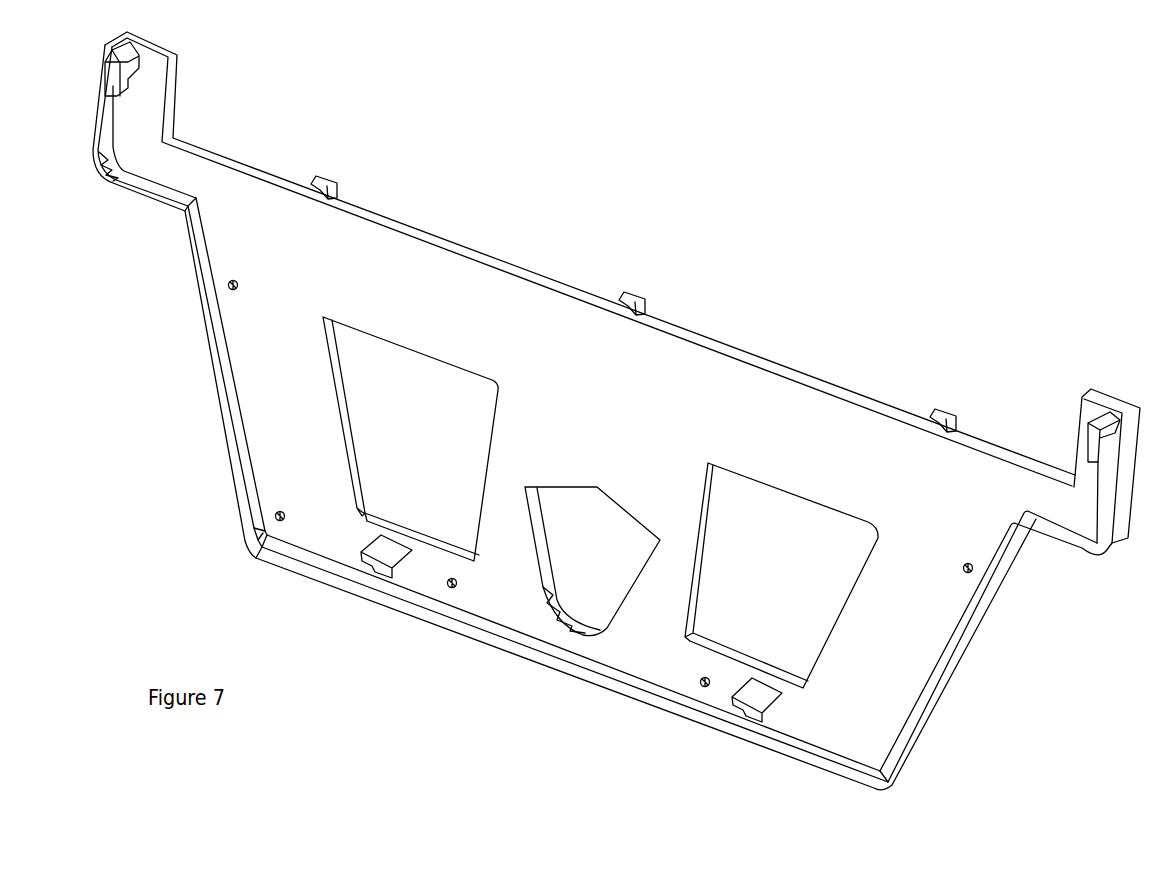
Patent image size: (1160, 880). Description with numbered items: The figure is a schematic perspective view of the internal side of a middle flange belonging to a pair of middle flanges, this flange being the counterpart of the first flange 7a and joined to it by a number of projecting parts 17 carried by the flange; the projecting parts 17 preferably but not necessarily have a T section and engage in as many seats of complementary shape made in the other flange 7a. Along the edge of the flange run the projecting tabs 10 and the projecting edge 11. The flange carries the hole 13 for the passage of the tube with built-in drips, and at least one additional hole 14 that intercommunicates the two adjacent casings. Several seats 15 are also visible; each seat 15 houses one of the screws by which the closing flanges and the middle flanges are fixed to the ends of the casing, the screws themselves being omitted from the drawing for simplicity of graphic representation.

The first middle flange 7a is at (413, 277).
The projecting tabs 10 is at (110, 77).
The projecting edge 11 is at (980, 620).
The hole 13 is at (623, 568).
The additional hole 14 is at (447, 453).
The seat 15 is at (229, 288).
The projecting parts 17 is at (325, 176).